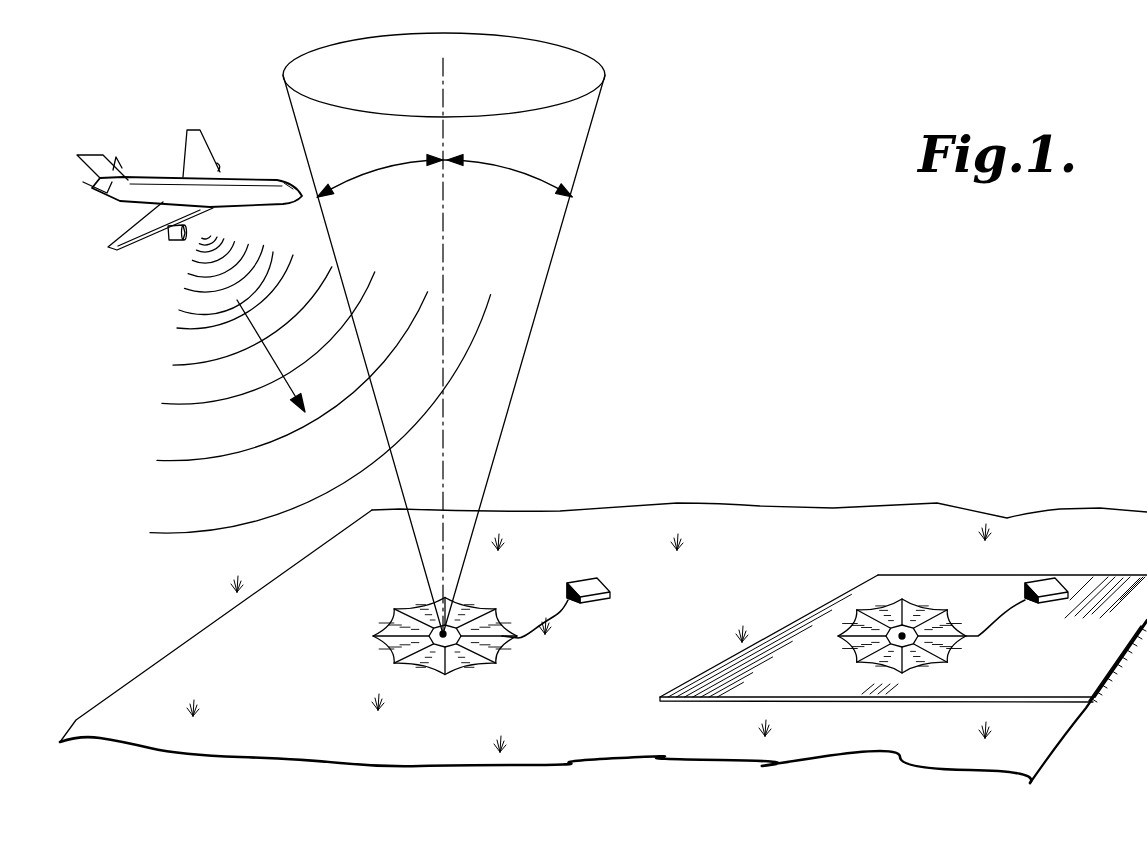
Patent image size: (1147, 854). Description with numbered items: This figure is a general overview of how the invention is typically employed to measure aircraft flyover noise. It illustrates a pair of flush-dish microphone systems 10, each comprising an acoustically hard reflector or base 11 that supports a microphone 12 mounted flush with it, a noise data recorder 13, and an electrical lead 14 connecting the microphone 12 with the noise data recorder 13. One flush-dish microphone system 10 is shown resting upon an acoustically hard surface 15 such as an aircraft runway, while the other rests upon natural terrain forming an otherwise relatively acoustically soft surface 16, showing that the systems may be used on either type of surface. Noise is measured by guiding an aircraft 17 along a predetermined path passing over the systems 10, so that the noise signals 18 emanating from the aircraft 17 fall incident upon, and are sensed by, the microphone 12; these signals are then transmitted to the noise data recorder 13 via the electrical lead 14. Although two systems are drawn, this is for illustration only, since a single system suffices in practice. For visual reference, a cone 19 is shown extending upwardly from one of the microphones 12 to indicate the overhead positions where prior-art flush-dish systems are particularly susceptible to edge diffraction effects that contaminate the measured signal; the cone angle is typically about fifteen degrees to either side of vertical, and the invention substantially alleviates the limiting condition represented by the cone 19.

The flush-dish microphone system 10 is at (490, 592).
The acoustically hard reflector or base 11 is at (908, 614).
The microphone 12 is at (428, 638).
The noise data recorder 13 is at (592, 583).
The electrical lead 14 is at (556, 620).
The acoustically hard surface 15 is at (784, 693).
The acoustically soft surface 16 is at (576, 745).
The aircraft 17 is at (197, 150).
The noise signals 18 is at (185, 368).
The cone 19 is at (585, 150).